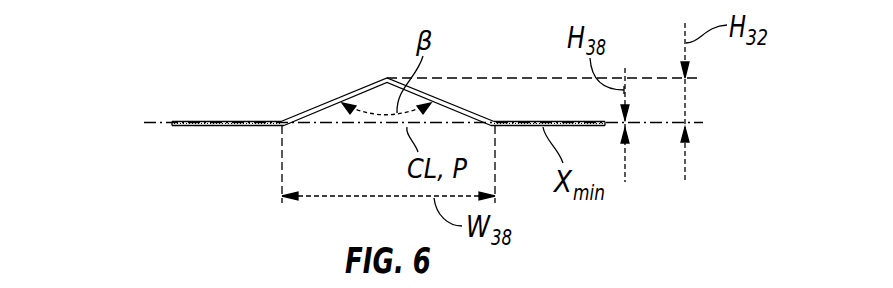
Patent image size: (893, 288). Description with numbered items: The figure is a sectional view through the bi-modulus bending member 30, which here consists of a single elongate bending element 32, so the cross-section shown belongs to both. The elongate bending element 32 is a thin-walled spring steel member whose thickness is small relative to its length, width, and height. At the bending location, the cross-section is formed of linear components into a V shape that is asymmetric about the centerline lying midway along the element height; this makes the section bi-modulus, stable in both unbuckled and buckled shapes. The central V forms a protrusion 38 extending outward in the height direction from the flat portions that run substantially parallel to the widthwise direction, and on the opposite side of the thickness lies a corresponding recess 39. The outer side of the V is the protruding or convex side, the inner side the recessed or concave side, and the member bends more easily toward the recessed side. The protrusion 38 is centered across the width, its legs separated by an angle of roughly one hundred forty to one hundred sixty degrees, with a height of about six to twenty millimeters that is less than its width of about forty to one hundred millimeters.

The bi-modulus bending member 30 is at (298, 115).
The elongate bending element 32 is at (187, 127).
The protrusion 38 is at (362, 93).
The recess 39 is at (317, 118).